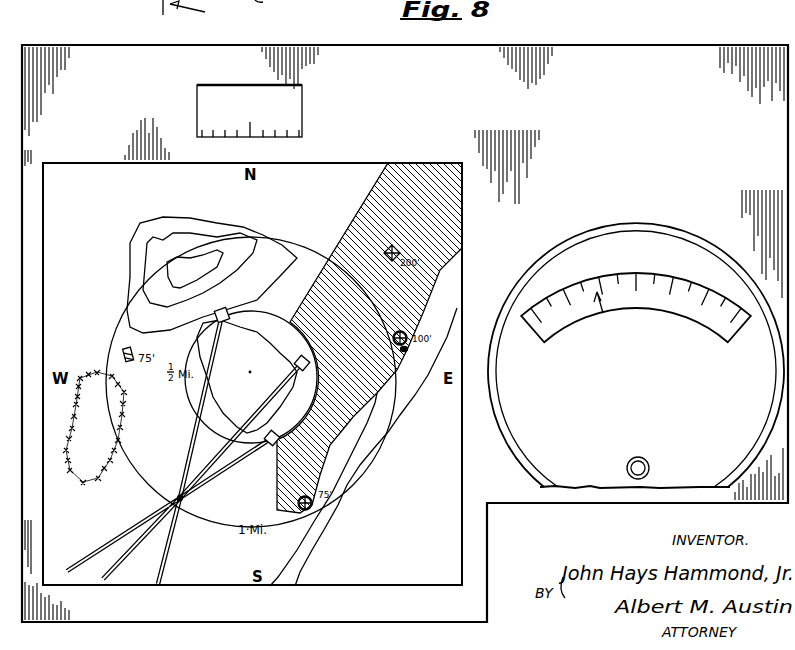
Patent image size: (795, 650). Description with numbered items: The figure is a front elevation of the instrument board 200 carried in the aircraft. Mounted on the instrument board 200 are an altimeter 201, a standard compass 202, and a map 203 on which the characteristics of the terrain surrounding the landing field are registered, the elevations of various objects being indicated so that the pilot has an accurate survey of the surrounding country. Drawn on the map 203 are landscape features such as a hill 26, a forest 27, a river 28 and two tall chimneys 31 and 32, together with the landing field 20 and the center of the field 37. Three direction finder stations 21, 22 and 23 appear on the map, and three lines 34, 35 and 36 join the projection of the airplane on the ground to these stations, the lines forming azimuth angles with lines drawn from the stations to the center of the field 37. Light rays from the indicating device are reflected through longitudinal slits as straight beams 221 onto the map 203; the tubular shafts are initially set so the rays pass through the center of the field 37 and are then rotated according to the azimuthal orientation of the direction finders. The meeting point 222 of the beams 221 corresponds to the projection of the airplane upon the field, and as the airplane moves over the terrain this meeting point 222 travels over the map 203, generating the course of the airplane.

The instrument board 200 is at (577, 53).
The altimeter 201 is at (620, 250).
The standard compass 202 is at (303, 106).
The map 203 is at (403, 170).
The hill 26 is at (195, 215).
The forest 27 is at (74, 420).
The town area 20 is at (254, 365).
The center of the field 37 is at (242, 381).
The radio station 23 is at (229, 316).
The radio station 22 is at (306, 370).
The radio station 21 is at (268, 446).
The line 36 is at (195, 431).
The line 35 is at (225, 448).
The line 34 is at (229, 470).
The meeting point 222 is at (180, 496).
The straight beams 221 is at (108, 545).
The tall chimney 32 is at (398, 367).
The tall chimney 31 is at (307, 508).
The river 28 is at (308, 557).